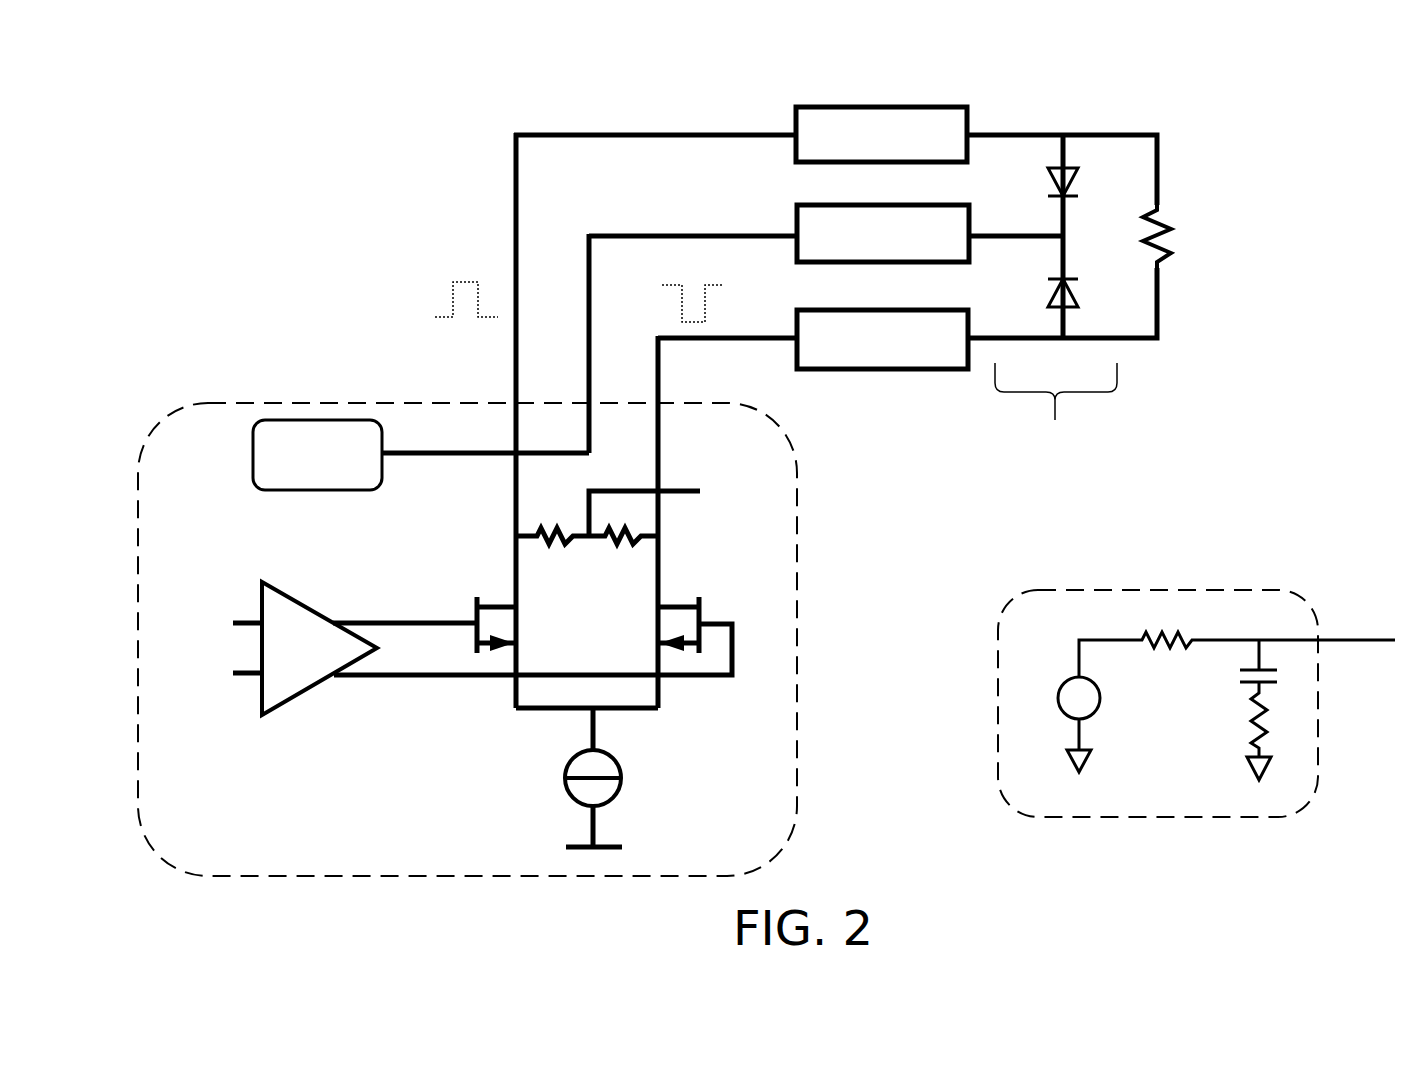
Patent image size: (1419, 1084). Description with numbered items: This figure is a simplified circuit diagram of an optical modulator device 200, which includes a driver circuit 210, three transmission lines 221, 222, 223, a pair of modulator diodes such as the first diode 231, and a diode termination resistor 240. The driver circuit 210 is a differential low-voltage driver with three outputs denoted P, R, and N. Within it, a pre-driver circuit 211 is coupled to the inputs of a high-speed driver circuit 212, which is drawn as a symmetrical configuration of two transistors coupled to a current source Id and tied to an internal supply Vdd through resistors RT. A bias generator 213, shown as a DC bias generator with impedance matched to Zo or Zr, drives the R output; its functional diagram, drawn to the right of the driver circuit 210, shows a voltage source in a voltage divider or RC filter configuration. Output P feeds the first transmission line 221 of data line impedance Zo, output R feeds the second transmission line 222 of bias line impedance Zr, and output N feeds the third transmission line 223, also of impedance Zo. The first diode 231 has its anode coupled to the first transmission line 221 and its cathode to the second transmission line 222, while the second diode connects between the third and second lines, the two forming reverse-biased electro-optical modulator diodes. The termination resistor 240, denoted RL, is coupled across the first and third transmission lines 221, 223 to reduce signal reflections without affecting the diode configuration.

The optical modulator device 200 is at (477, 112).
The driver circuit 210 is at (287, 368).
The pre-driver circuit 211 is at (262, 712).
The high-speed driver circuit 212 is at (521, 778).
The bias generator 213 is at (253, 485).
The first transmission line 221 is at (820, 165).
The second transmission line 222 is at (822, 265).
The third transmission line 223 is at (822, 372).
The first diode 231 is at (1058, 166).
The diode termination resistor 240 is at (1160, 268).